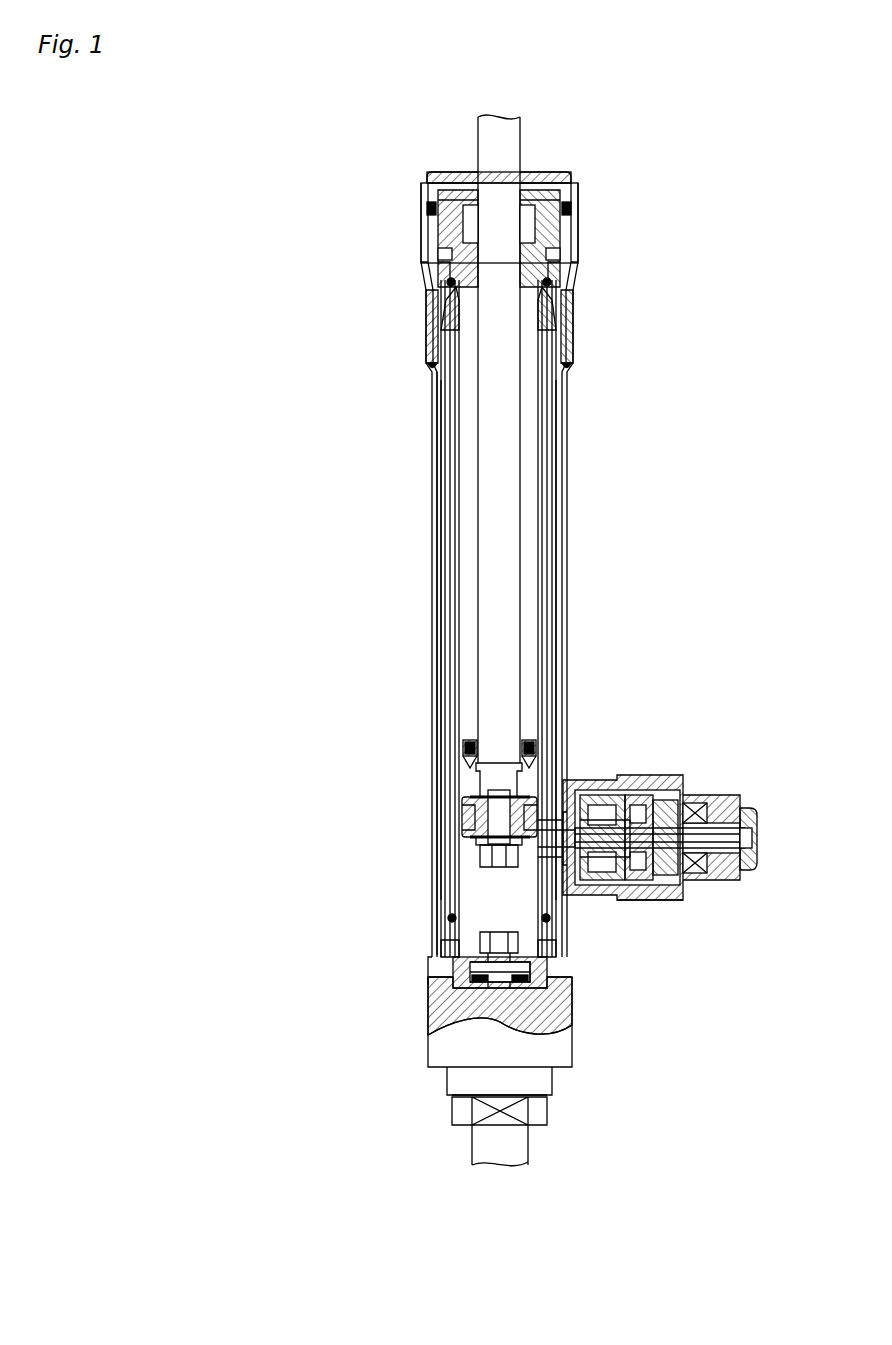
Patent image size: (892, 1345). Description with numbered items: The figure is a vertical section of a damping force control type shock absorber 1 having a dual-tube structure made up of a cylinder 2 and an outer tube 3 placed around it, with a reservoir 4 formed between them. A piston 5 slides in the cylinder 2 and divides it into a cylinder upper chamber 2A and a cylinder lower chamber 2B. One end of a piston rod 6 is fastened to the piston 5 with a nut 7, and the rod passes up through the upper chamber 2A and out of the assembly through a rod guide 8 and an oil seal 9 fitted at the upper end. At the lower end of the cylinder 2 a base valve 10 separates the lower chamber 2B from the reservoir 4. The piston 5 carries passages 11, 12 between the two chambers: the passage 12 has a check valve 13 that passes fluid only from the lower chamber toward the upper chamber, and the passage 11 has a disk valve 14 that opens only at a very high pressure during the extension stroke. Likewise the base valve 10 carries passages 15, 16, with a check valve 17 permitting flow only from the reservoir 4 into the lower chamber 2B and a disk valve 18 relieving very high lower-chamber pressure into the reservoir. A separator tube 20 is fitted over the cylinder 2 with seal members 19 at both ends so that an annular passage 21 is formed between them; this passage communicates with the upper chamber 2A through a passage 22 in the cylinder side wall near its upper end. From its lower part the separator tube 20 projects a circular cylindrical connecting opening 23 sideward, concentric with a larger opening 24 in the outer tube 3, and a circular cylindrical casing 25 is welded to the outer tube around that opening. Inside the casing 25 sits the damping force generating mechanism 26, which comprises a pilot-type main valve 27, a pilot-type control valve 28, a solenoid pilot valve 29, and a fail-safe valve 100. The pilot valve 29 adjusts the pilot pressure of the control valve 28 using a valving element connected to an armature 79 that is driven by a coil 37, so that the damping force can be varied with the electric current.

The damping force control type shock absorber 1 is at (678, 240).
The cylinder 2 is at (543, 393).
The cylinder upper chamber 2A is at (467, 575).
The cylinder lower chamber 2B is at (470, 893).
The outer tube 3 is at (568, 440).
The reservoir 4 is at (437, 398).
The piston 5 is at (460, 825).
The piston rod 6 is at (488, 142).
The nut 7 is at (480, 860).
The rod guide 8 is at (420, 250).
The oil seal 9 is at (540, 178).
The base valve 10 is at (518, 955).
The passage 11 is at (462, 810).
The passage 12 is at (562, 745).
The check valve 13 is at (563, 727).
The disk valve 14 is at (480, 850).
The passage 15 is at (442, 968).
The passage 16 is at (548, 977).
The check valve 17 is at (455, 955).
The disk valve 18 is at (572, 1015).
The seal members 19 is at (447, 277).
The separator tube 20 is at (443, 487).
The annular passage 21 is at (552, 487).
The passage 22 is at (542, 327).
The connecting opening 23 is at (592, 783).
The opening 24 is at (580, 898).
The casing 25 is at (592, 777).
The damping force generating mechanism 26 is at (709, 793).
The main valve 27 is at (608, 783).
The control valve 28 is at (640, 897).
The pilot valve 29 is at (703, 797).
The coil 37 is at (710, 798).
The armature 79 is at (757, 872).
The fail-safe valve 100 is at (663, 900).